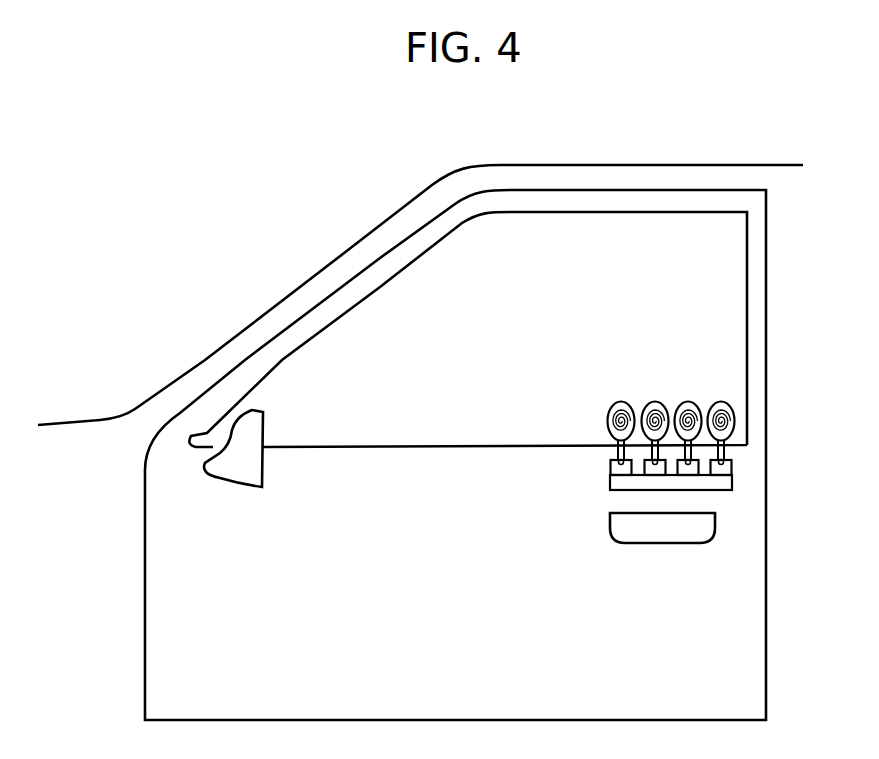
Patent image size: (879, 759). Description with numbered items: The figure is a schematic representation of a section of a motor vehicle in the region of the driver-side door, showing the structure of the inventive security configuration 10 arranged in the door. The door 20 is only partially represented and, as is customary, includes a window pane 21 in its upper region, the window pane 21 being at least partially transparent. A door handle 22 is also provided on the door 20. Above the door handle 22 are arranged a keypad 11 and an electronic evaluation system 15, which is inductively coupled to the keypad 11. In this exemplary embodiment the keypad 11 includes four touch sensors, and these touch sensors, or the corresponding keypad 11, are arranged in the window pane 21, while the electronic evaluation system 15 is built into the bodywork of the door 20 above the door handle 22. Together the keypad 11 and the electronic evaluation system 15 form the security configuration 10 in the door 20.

The security configuration 10 is at (695, 415).
The keypad 11 is at (735, 390).
The electronic evaluation system 15 is at (600, 448).
The door 20 is at (173, 603).
The window pane 21 is at (362, 330).
The door handle 22 is at (662, 527).